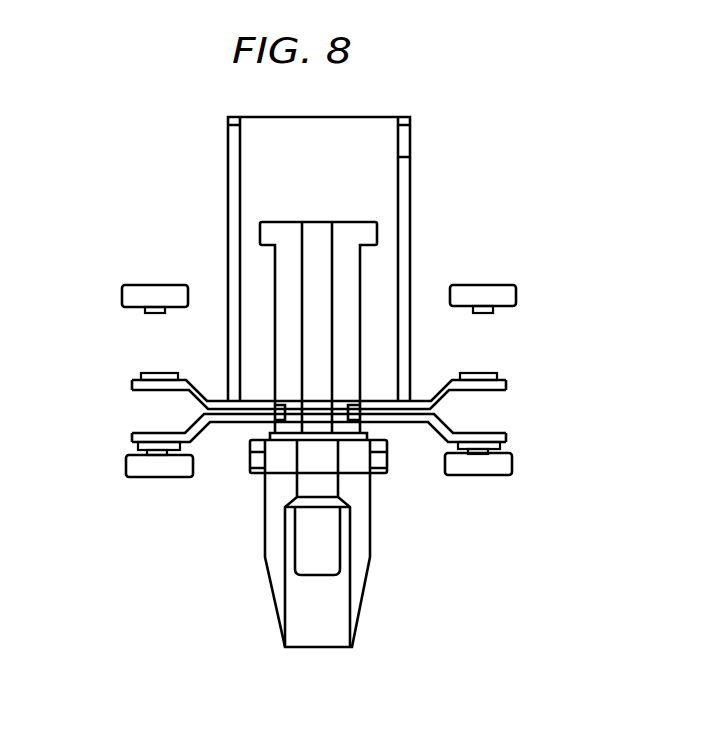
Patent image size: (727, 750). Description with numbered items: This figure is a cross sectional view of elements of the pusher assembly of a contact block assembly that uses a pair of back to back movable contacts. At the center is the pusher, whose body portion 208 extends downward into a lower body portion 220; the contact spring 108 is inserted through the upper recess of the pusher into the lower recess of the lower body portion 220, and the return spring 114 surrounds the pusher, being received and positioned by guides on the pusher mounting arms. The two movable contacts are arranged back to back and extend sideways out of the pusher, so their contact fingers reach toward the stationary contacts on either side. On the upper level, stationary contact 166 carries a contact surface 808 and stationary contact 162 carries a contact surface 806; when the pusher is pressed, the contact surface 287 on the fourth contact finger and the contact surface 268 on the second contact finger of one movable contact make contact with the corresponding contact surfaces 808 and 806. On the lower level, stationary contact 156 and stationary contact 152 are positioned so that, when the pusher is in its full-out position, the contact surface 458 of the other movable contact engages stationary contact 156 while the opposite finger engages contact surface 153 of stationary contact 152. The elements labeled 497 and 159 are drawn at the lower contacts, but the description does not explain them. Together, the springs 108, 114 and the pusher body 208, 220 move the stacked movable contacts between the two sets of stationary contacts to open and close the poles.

The return spring 114 is at (410, 156).
The body portion 208 is at (360, 274).
The stationary contact 166 is at (122, 298).
The contact surface 808 is at (148, 313).
The stationary contact 162 is at (516, 293).
The contact surface 806 is at (490, 313).
The contact surface 287 is at (160, 373).
The contact surface 268 is at (478, 373).
The contact surface 458 is at (138, 447).
The right lower pad 497 is at (500, 447).
The left lower roller tab 159 is at (145, 451).
The contact surface 153 is at (490, 451).
The stationary contact 156 is at (158, 478).
The stationary contact 152 is at (495, 476).
The contact spring 108 is at (340, 490).
The lower body portion 220 is at (371, 533).